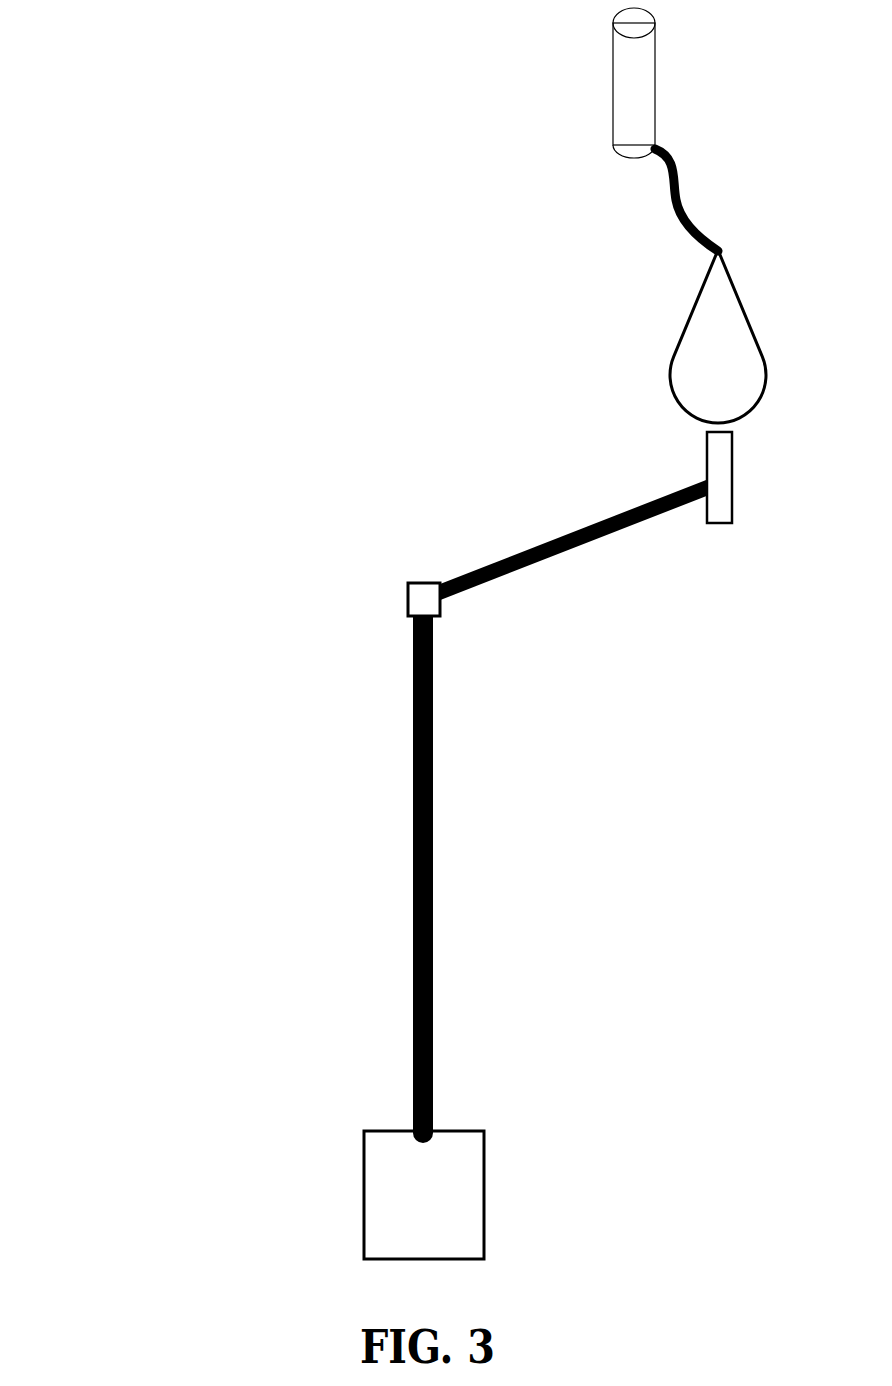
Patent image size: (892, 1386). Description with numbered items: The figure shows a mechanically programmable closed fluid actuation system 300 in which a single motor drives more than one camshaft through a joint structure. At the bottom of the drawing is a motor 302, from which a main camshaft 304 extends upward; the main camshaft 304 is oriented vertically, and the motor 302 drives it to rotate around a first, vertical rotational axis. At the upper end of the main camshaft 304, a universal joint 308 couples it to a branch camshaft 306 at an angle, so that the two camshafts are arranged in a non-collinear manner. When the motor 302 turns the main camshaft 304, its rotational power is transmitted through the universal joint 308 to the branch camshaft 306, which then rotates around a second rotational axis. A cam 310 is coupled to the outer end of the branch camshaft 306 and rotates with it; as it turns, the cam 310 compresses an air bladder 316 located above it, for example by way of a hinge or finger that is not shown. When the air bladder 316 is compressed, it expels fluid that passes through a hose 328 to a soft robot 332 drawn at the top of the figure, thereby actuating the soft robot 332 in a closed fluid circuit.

The mechanically programmable closed fluid actuation system 300 is at (129, 61).
The motor 302 is at (472, 1133).
The main camshaft 304 is at (434, 922).
The branch camshaft 306 is at (565, 548).
The universal joint 308 is at (420, 583).
The cam 310 is at (733, 487).
The air bladder 316 is at (688, 325).
The hose 328 is at (690, 227).
The soft robot 332 is at (654, 90).